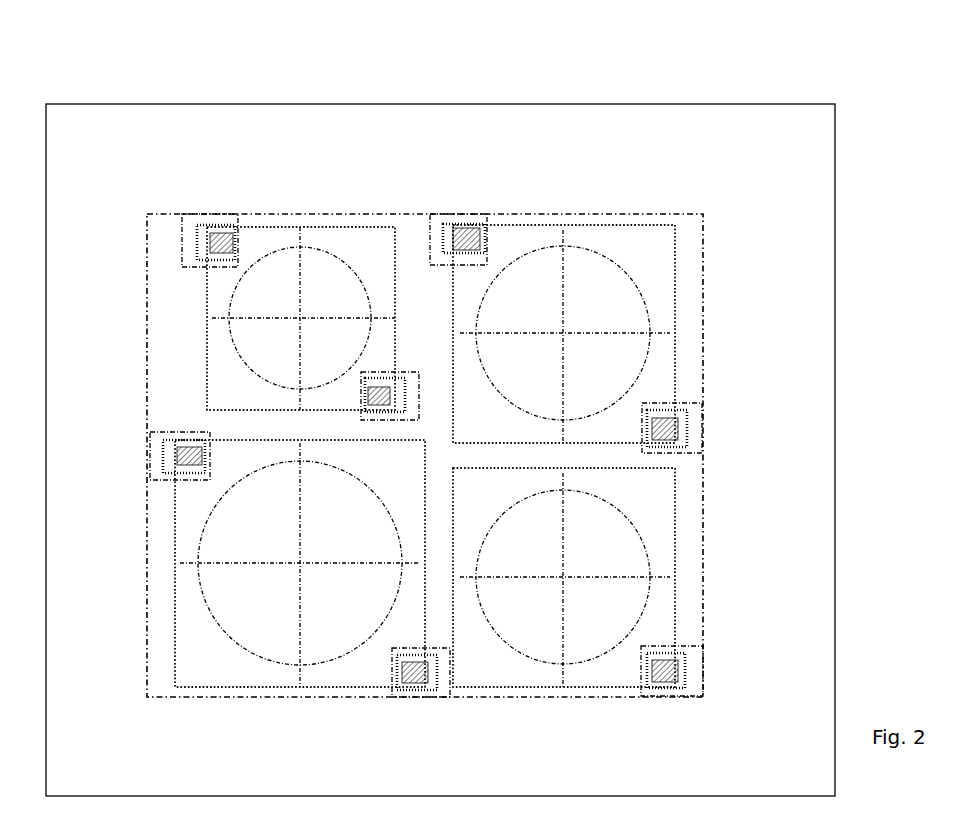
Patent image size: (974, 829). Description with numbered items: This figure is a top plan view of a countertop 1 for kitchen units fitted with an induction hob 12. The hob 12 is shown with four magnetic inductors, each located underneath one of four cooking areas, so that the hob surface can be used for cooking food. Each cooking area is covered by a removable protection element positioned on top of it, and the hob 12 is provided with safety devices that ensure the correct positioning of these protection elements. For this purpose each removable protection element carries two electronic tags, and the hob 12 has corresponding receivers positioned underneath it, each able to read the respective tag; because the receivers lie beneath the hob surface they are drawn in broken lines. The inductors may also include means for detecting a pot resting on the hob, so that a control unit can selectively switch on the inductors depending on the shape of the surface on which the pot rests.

The countertop 1 is at (438, 104).
The induction hob 12 is at (708, 256).